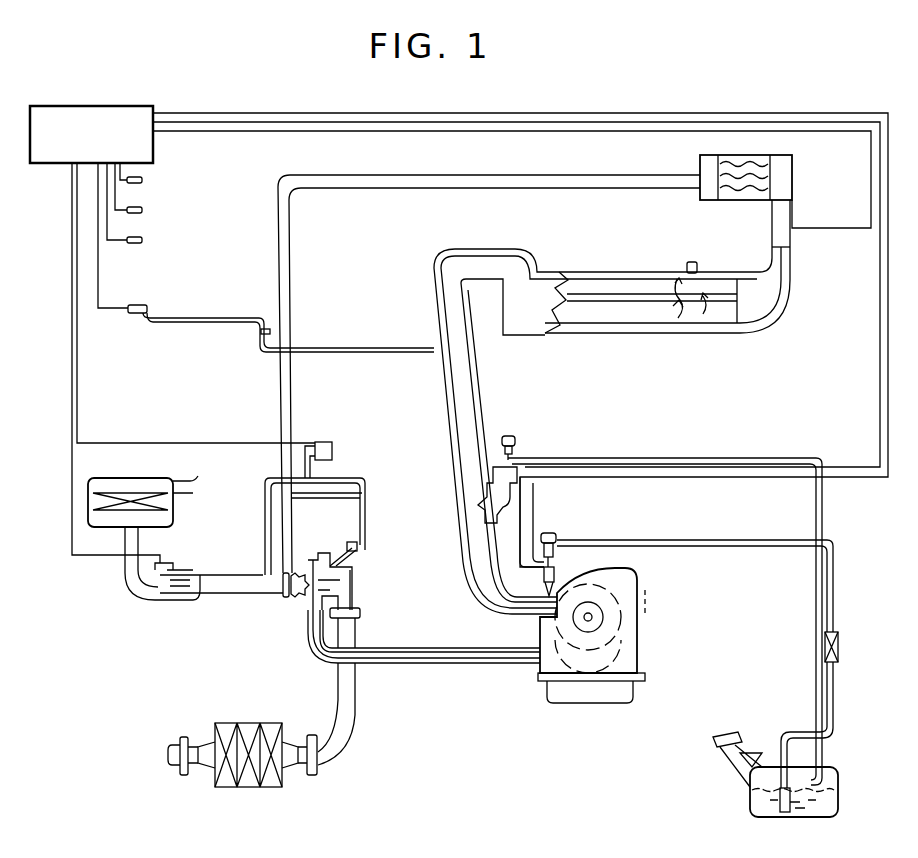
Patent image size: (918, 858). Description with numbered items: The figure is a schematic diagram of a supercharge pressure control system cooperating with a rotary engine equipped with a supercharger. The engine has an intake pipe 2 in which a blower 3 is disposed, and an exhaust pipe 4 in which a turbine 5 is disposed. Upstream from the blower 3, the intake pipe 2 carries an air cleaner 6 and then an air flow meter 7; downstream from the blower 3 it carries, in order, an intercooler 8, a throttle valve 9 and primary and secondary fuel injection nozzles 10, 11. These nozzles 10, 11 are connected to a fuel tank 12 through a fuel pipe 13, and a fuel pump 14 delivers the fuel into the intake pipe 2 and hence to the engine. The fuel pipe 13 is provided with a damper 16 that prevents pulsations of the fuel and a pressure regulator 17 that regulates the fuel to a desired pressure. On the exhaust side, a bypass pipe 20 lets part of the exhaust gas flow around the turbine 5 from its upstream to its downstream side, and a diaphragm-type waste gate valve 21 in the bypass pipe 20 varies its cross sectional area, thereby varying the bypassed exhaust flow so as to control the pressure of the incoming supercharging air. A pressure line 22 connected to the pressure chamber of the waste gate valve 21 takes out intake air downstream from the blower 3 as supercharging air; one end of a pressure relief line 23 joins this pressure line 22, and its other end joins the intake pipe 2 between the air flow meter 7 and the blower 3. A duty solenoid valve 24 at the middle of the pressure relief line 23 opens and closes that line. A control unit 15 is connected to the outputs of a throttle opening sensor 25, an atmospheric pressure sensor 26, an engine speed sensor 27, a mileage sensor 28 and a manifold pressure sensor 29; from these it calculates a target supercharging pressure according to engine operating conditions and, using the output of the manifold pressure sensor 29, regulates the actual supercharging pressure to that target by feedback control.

The intake pipe 2 is at (293, 371).
The blower 3 is at (287, 570).
The exhaust pipe 4 is at (412, 650).
The turbine 5 is at (333, 583).
The air cleaner 6 is at (160, 477).
The air flow meter 7 is at (192, 563).
The intercooler 8 is at (797, 160).
The throttle valve 9 is at (683, 320).
The primary fuel injection nozzle 10 is at (558, 543).
The secondary fuel injection nozzle 11 is at (493, 465).
The fuel tank 12 is at (838, 777).
The fuel pipe 13 is at (838, 682).
The fuel pump 14 is at (755, 797).
The control unit 15 is at (43, 166).
The damper 16 is at (548, 533).
The pressure regulator 17 is at (512, 436).
The bypass pipe 20 is at (330, 563).
The waste gate valve 21 is at (356, 550).
The pressure line 22 is at (338, 500).
The pressure relief line 23 is at (265, 527).
The duty solenoid valve 24 is at (333, 450).
The throttle opening sensor 25 is at (688, 266).
The atmospheric pressure sensor 26 is at (142, 180).
The engine speed sensor 27 is at (142, 210).
The mileage sensor 28 is at (142, 240).
The manifold pressure sensor 29 is at (137, 305).